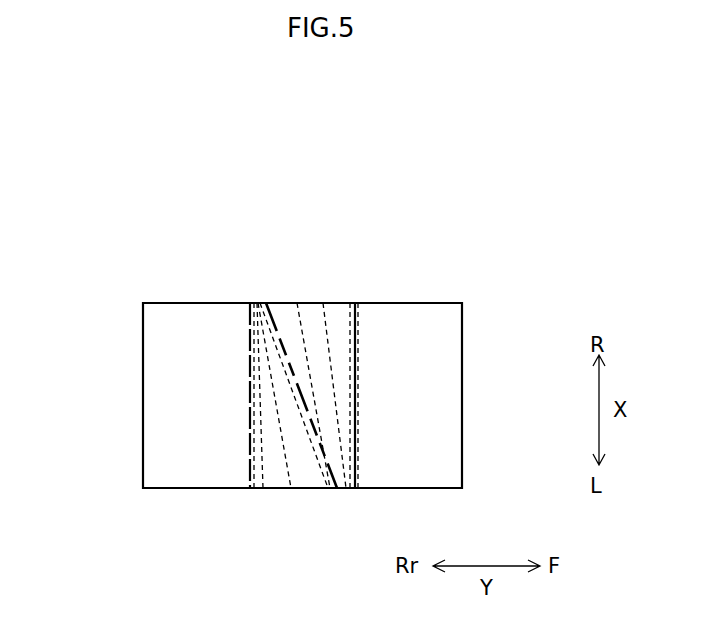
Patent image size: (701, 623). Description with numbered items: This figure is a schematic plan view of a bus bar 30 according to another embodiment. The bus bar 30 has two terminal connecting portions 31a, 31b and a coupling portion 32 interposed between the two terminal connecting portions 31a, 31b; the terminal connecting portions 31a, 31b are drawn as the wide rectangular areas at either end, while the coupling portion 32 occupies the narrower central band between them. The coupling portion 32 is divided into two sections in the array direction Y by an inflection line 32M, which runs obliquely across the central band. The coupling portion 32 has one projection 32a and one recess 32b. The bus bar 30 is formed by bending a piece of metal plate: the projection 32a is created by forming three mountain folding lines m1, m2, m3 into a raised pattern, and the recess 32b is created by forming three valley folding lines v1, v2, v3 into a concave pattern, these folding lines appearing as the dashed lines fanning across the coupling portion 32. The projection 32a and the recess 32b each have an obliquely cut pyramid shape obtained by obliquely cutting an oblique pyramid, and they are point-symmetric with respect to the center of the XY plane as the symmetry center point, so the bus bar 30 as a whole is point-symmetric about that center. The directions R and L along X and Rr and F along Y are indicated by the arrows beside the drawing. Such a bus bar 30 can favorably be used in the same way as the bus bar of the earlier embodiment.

The bus bar 30 is at (90, 192).
The terminal connecting portion 31a is at (422, 318).
The terminal connecting portion 31b is at (182, 318).
The coupling portion 32 is at (363, 185).
The projection 32a is at (255, 303).
The recess 32b is at (311, 325).
The inflection line 32M is at (298, 393).
The valley folding line v1 is at (298, 318).
The valley folding line v2 is at (326, 325).
The valley folding line v3 is at (358, 327).
The mountain folding line m1 is at (262, 488).
The mountain folding line m2 is at (290, 488).
The mountain folding line m3 is at (328, 488).